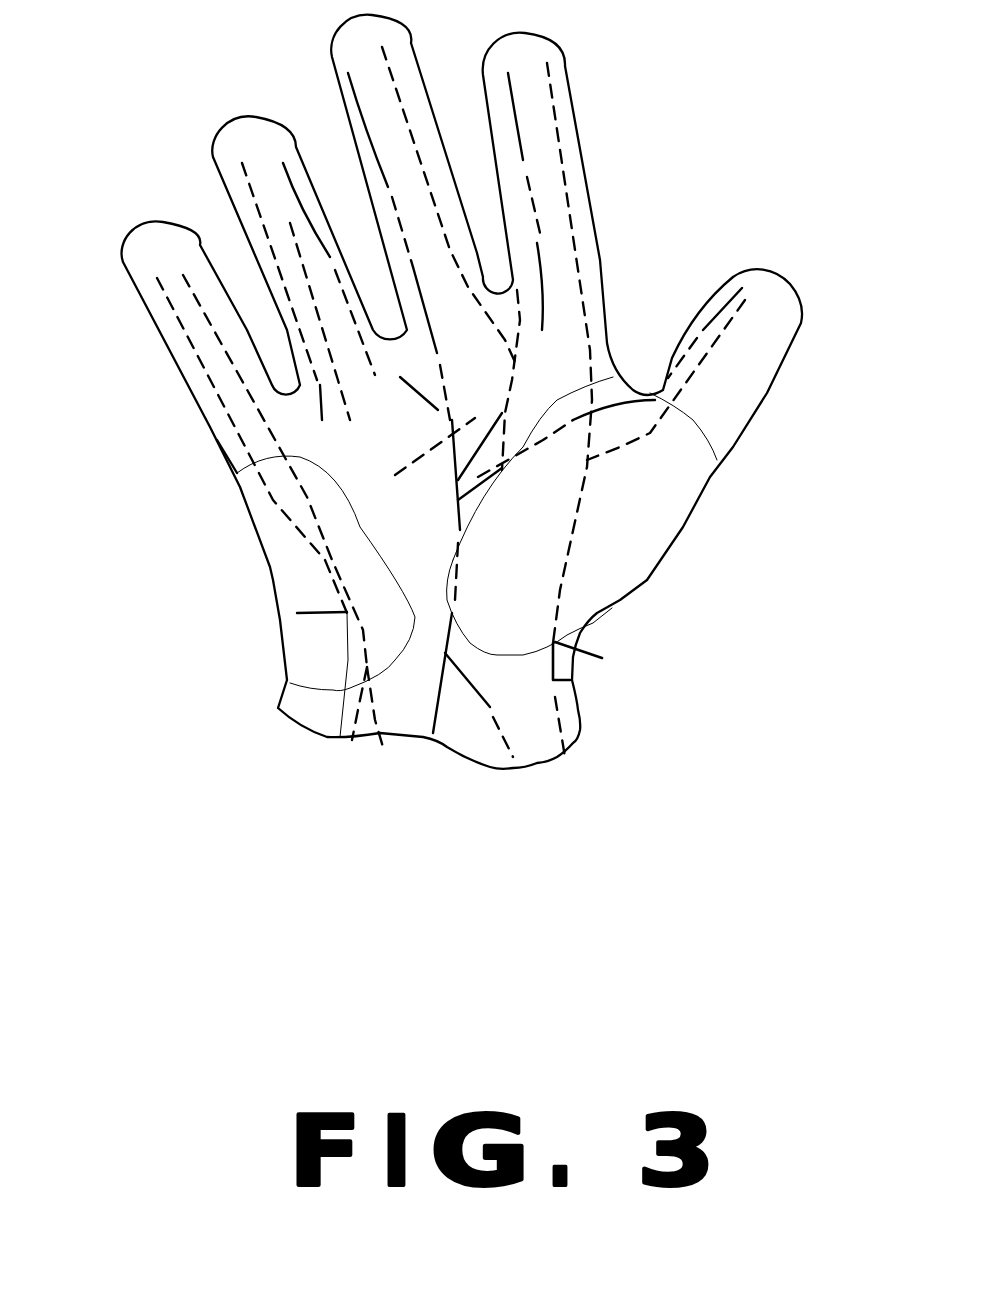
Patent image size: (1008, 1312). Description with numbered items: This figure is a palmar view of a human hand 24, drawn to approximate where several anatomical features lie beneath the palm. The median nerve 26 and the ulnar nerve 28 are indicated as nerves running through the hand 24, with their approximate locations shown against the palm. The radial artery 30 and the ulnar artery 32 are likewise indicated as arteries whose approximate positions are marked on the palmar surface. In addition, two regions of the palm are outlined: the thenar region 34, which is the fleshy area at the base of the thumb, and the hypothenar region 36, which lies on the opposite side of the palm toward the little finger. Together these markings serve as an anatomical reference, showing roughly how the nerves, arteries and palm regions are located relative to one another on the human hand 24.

The human hand 24 is at (638, 297).
The median nerve 26 is at (516, 765).
The ulnar nerve 28 is at (297, 613).
The radial artery 30 is at (573, 681).
The ulnar artery 32 is at (383, 745).
The thenar region 34 is at (602, 658).
The hypothenar region 36 is at (207, 422).